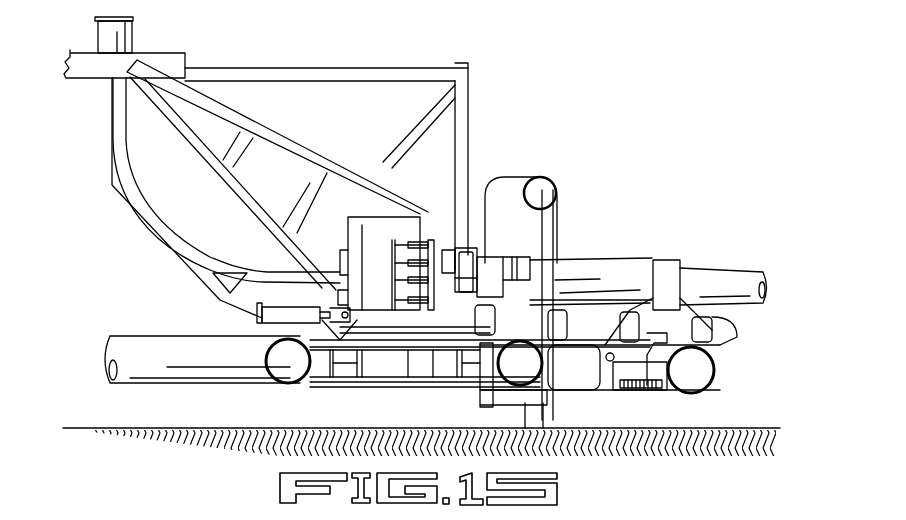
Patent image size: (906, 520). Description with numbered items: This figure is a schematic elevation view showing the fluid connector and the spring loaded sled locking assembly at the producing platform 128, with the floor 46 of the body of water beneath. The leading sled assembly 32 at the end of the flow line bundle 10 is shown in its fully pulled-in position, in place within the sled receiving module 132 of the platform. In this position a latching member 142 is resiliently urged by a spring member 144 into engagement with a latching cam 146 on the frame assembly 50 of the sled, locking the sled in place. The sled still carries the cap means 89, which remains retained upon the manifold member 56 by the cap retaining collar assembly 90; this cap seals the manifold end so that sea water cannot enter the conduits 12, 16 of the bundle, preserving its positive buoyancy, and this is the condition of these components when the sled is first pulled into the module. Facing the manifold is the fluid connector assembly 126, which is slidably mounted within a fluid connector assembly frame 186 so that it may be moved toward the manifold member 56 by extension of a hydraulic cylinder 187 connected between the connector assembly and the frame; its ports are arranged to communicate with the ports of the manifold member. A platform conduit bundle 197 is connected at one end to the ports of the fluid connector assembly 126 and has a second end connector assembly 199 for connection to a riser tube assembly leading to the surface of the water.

The flow line bundle 10 is at (718, 277).
The conduit 12 is at (442, 53).
The conduit 16 is at (435, 203).
The leading sled 32 is at (608, 268).
The floor 46 is at (205, 426).
The frame assembly 50 is at (727, 340).
The manifold member 56 is at (495, 270).
The cap means 89 is at (440, 267).
The cap retaining collar assembly 90 is at (470, 250).
The fluid conductor assembly 126 is at (430, 233).
The production platform 128 is at (532, 424).
The sled receiving module 132 is at (547, 220).
The latching member 142 is at (608, 372).
The spring member 144 is at (648, 383).
The latching cam 146 is at (657, 308).
The fluid connector assembly frame 186 is at (302, 85).
The hydraulic cylinder 187 is at (258, 316).
The platform conduit bundle 197 is at (175, 242).
The second end connector assembly 199 is at (120, 43).